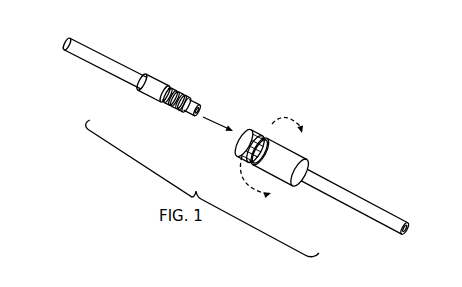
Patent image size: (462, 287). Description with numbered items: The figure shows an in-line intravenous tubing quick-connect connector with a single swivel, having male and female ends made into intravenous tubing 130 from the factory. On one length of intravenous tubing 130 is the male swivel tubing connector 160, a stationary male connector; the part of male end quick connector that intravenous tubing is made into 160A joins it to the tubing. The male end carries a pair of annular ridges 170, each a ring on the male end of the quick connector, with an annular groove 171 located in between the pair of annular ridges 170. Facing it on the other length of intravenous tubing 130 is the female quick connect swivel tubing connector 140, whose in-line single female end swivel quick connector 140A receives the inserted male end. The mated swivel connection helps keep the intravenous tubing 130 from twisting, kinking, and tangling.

The intravenous tubing 130 is at (127, 67).
The male swivel tubing connector 160 is at (153, 77).
The part of male end quick connector that intravenous tubing is made into 160A is at (140, 87).
The ring on male end of intravenous quick connector (annular ridge) 170 is at (178, 93).
The groove on male end of intravenous quick connector (annular groove) 171 is at (185, 97).
The female quick connect swivel tubing connector 140 is at (258, 132).
The in-line single female end swivel quick connector 140A is at (250, 125).